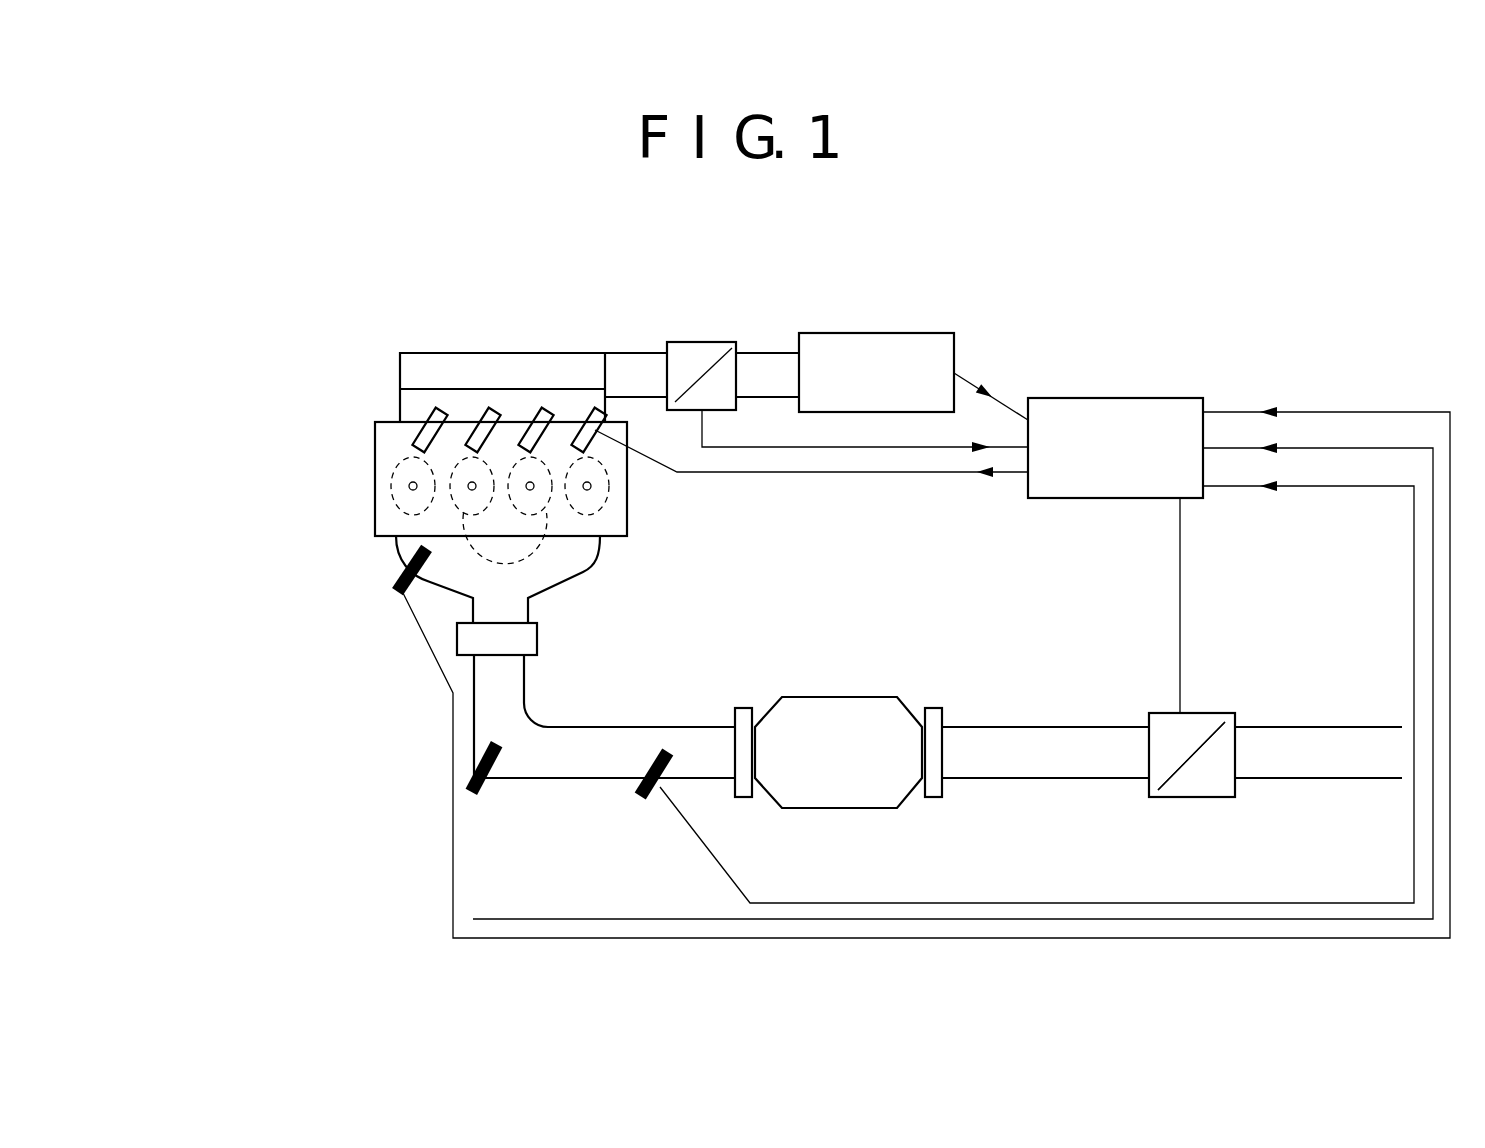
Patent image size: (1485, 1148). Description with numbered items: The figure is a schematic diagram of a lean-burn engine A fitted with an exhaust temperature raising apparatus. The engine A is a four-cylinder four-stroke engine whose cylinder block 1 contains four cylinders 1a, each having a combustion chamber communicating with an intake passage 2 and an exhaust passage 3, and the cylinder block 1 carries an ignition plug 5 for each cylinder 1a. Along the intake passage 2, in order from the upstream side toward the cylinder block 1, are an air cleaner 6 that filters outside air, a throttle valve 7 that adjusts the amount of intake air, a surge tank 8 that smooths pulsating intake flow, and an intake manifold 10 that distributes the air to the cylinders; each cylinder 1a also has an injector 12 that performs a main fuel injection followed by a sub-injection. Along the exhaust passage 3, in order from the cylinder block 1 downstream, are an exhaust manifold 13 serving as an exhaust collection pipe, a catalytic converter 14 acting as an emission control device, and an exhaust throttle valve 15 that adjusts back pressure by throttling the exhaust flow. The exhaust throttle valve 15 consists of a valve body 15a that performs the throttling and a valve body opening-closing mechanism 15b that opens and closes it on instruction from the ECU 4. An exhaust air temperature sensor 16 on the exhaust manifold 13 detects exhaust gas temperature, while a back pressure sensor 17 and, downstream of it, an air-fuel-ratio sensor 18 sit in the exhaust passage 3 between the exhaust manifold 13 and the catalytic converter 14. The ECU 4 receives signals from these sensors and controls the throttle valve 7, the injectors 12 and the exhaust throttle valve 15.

The lean-burn engine A is at (1015, 353).
The cylinder block 1 is at (627, 540).
The cylinder 1a is at (392, 482).
The intake passage 2 is at (638, 352).
The exhaust passage 3 is at (613, 727).
The ECU 4 is at (1097, 398).
The ignition plug 5 is at (409, 488).
The air cleaner 6 is at (867, 333).
The throttle valve 7 is at (675, 341).
The surge tank 8 is at (417, 353).
The intake manifold 10 is at (457, 397).
The injector 12 is at (538, 410).
The exhaust manifold 13 is at (593, 568).
The catalytic converter 14 is at (843, 680).
The exhaust throttle valve 15 is at (1200, 713).
The valve body 15a is at (1200, 750).
The valve body opening-closing mechanism 15b is at (1152, 790).
The exhaust air temperature sensor 16 is at (403, 595).
The back pressure sensor 17 is at (468, 795).
The air-fuel-ratio sensor 18 is at (657, 792).